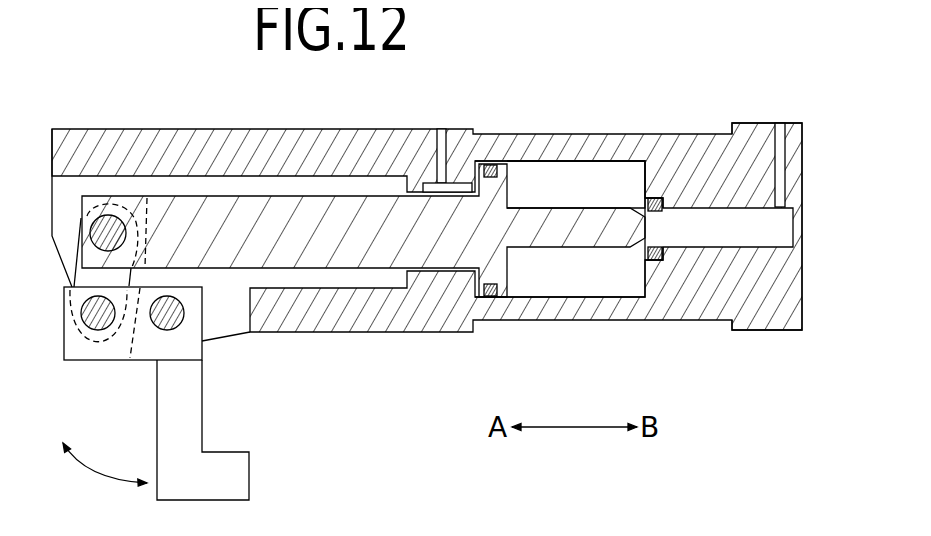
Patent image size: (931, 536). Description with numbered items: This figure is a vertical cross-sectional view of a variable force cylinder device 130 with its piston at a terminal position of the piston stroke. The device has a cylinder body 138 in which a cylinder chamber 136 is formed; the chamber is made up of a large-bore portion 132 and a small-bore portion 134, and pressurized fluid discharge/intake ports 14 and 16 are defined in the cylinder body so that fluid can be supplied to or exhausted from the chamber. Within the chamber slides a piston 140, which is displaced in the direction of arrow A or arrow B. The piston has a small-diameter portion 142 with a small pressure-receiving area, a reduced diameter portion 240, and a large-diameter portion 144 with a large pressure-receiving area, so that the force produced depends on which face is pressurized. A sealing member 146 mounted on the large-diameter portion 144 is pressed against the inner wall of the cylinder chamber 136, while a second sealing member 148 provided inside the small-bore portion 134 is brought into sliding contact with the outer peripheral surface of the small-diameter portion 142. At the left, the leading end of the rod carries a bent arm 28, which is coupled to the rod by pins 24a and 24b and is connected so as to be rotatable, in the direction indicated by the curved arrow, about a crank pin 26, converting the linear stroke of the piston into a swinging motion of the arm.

The pressurized fluid discharge/intake port 14 is at (779, 133).
The pressurized fluid discharge/intake port 16 is at (440, 128).
The pin 24a is at (108, 218).
The pin 24b is at (100, 318).
The crank pin 26 is at (157, 330).
The bent arm 28 is at (192, 396).
The variable force cylinder device 130 is at (427, 213).
The large-bore portion 132 is at (553, 162).
The small-bore portion 134 is at (716, 248).
The cylinder chamber 136 is at (611, 171).
The cylinder body 138 is at (348, 127).
The piston 140 is at (528, 205).
The small-diameter portion 142 is at (570, 250).
The large-diameter portion 144 is at (492, 298).
The sealing member 146 is at (495, 297).
The sealing member 148 is at (655, 262).
The reduced diameter portion 240 is at (637, 262).